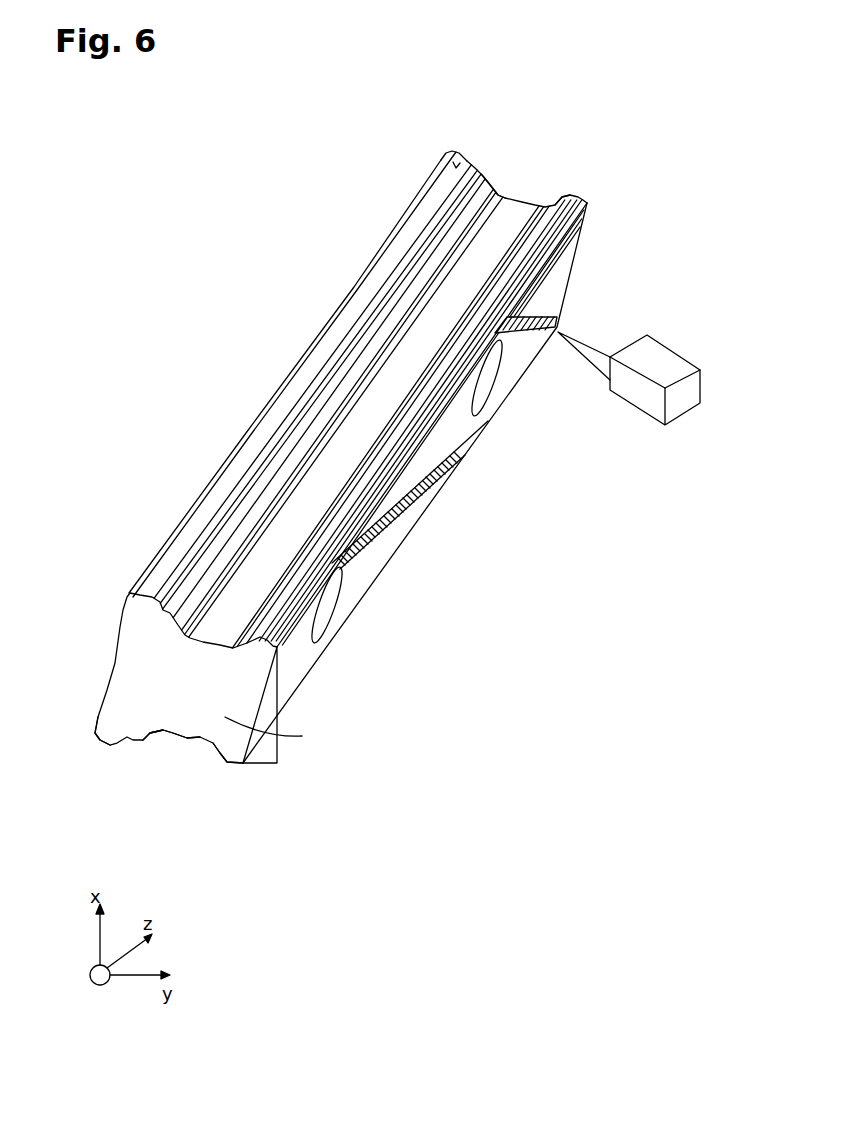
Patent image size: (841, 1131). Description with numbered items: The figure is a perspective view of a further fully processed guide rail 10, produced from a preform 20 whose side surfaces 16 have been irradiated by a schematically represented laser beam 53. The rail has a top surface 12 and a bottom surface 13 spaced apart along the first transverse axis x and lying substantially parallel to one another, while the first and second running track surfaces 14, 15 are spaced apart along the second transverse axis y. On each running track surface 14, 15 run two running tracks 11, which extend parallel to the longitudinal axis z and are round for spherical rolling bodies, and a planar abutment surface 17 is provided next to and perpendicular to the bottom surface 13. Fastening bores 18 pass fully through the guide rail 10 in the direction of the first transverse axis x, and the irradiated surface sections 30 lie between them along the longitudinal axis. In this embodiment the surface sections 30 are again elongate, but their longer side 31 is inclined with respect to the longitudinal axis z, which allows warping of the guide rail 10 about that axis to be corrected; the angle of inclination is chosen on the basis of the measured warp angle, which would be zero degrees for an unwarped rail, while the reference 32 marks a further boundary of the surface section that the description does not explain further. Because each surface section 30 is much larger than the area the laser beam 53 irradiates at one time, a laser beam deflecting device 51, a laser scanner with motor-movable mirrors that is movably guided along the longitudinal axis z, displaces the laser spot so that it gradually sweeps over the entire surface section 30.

The guide rail 10 is at (150, 665).
The preform 20 is at (132, 678).
The running tracks 11 is at (490, 183).
The top surface 12 is at (310, 667).
The bottom surface 13 is at (120, 616).
The first running track surface 14 is at (523, 207).
The second running track surface 15 is at (190, 743).
The side surfaces 16 is at (304, 490).
The abutment surface 17 is at (462, 158).
The fastening bores 18 is at (490, 380).
The surface sections 30 is at (399, 425).
The longer side 31 is at (412, 490).
The strip boundary line 32 is at (347, 540).
The laser beam deflecting device 51 is at (662, 360).
The laser beam 53 is at (600, 337).